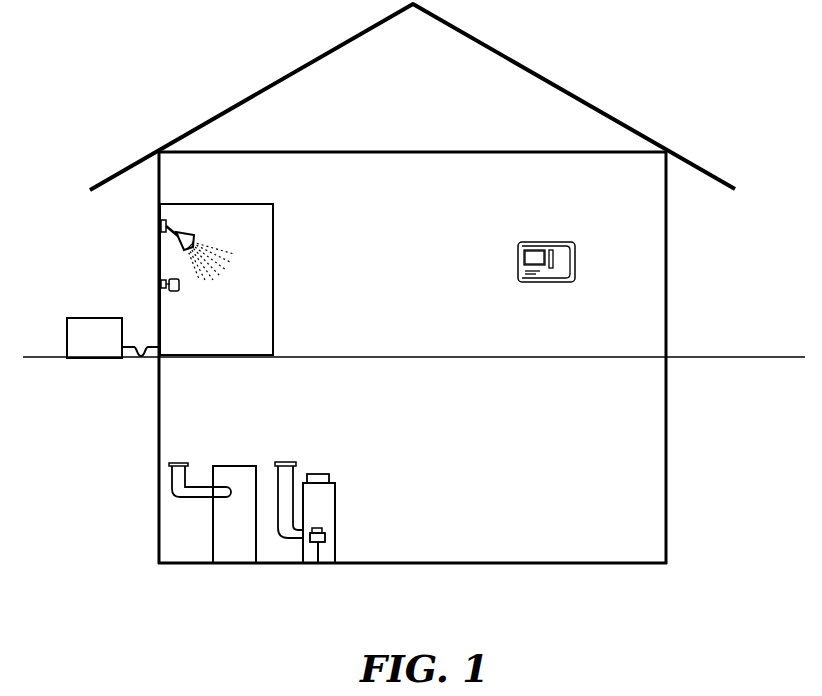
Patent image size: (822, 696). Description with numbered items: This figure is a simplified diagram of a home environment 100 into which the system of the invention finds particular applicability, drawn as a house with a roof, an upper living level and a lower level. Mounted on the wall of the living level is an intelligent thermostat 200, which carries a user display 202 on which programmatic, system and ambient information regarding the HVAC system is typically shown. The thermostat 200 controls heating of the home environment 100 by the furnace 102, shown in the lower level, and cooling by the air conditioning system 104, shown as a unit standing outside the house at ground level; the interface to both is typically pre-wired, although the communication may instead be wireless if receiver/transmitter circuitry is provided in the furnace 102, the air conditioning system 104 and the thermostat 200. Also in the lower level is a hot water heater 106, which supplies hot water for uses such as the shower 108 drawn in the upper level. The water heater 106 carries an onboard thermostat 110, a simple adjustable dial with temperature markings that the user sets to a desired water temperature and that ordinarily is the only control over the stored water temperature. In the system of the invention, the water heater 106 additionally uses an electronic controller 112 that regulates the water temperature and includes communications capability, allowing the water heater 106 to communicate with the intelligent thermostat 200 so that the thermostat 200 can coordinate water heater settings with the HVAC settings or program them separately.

The home environment 100 is at (614, 85).
The furnace 102 is at (220, 520).
The air conditioning system 104 is at (100, 325).
The hot water heater 106 is at (325, 502).
The shower 108 is at (213, 210).
The onboard thermostat 110 is at (325, 536).
The electronic controller 112 is at (318, 565).
The intelligent thermostat 200 is at (565, 279).
The user display 202 is at (533, 252).